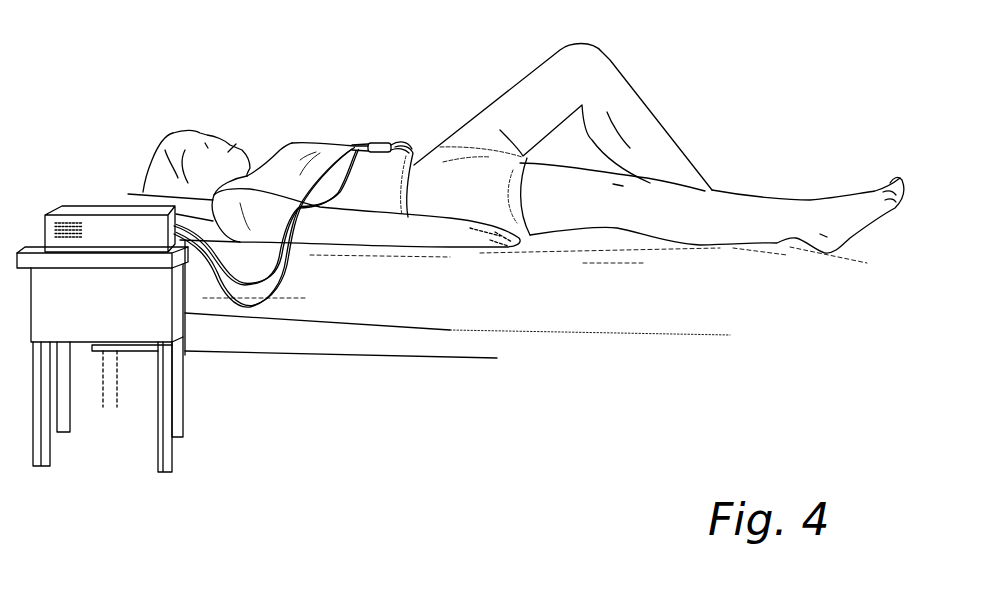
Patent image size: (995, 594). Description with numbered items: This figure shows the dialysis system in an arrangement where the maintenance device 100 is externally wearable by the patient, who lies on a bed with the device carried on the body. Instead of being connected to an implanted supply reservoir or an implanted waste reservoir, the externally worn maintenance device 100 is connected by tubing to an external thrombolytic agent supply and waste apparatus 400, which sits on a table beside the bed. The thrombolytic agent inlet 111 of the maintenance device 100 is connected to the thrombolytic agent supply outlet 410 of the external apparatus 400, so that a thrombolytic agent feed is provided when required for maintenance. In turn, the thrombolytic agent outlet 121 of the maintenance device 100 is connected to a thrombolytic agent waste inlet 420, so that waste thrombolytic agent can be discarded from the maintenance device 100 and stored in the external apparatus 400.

The maintenance device 100 is at (383, 142).
The thrombolytic agent inlet 111 is at (350, 147).
The thrombolytic agent outlet 121 is at (370, 144).
The external thrombolytic agent supply and waste apparatus 400 is at (78, 221).
The thrombolytic agent supply outlet 410 is at (193, 216).
The thrombolytic agent waste inlet 420 is at (174, 255).